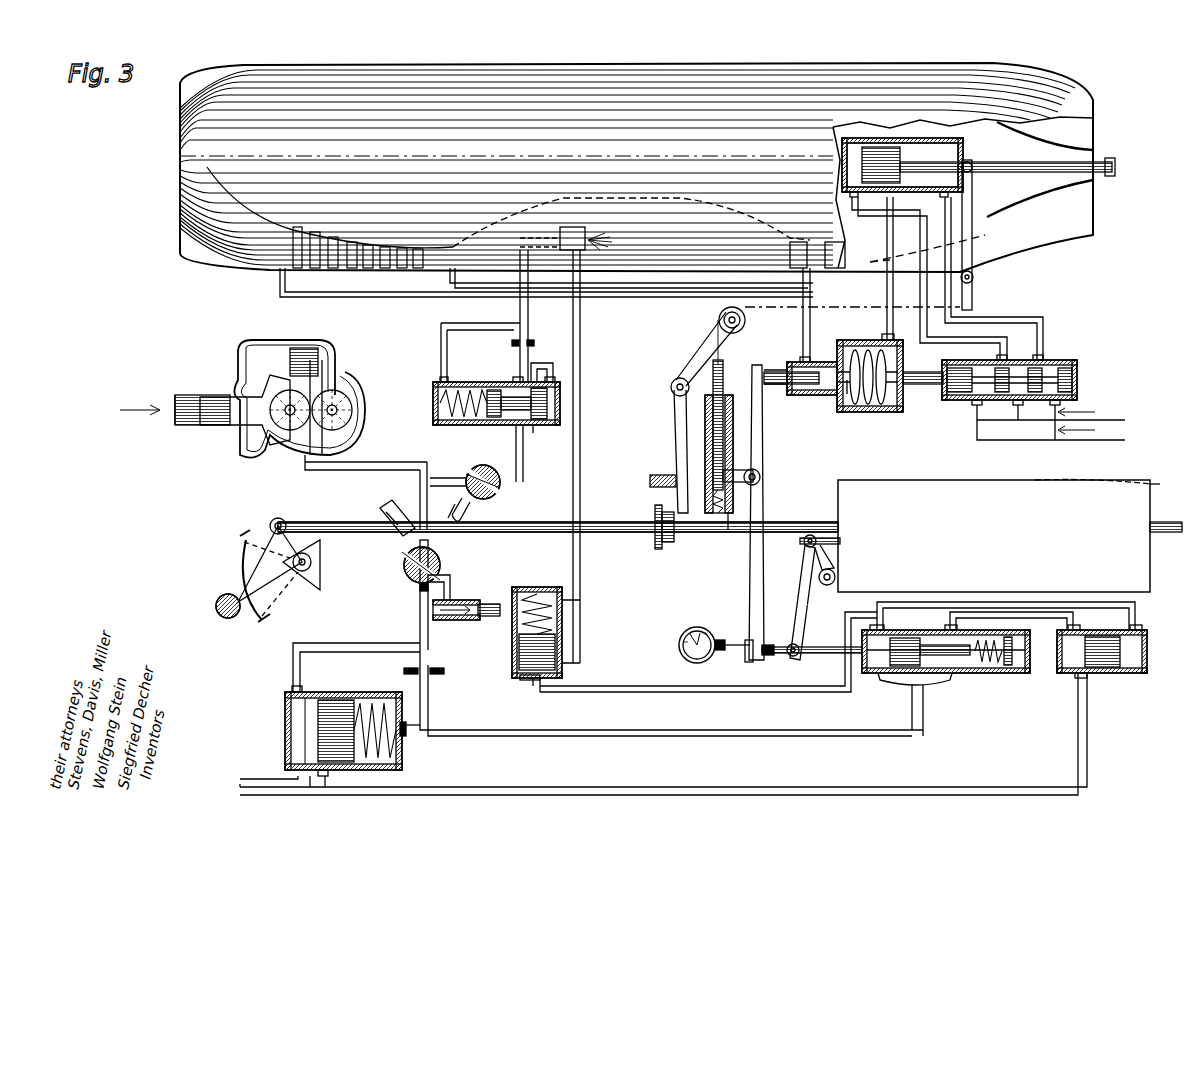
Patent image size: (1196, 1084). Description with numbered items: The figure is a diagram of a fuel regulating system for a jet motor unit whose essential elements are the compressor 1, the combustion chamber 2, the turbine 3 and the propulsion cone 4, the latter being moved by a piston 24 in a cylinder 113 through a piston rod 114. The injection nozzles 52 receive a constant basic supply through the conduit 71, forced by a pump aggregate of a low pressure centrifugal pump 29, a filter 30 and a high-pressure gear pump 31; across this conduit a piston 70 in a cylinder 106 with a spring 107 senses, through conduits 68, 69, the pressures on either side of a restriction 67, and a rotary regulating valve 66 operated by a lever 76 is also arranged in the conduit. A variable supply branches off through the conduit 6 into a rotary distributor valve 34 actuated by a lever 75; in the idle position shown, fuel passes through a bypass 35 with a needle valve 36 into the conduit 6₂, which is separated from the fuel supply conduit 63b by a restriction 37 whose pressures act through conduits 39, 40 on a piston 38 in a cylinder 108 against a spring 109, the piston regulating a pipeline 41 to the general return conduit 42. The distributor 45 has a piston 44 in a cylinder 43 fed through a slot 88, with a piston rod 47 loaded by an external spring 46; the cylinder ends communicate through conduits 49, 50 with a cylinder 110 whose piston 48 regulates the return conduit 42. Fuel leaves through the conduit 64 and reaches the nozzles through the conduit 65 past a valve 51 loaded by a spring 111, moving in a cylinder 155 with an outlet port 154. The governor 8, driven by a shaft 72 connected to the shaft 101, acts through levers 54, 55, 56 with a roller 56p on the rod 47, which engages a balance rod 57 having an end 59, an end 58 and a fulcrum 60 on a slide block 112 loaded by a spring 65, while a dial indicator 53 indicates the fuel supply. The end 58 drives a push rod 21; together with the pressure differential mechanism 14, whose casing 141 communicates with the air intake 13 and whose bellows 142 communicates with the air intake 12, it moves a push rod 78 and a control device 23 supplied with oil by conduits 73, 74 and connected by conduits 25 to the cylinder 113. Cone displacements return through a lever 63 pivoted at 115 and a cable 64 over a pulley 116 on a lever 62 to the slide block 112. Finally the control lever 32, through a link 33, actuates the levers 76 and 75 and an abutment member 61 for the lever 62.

The compressor 1 is at (365, 280).
The combustion chamber 2 is at (680, 285).
The turbine 3 is at (817, 302).
The propulsion cone 4 is at (1093, 112).
The variable fuel supply conduit 6 is at (428, 515).
The governor 8 is at (1150, 560).
The air intake 12 is at (280, 278).
The air intake 13 is at (440, 275).
The pressure differential mechanism 14 is at (888, 405).
The casing 141 is at (862, 345).
The bellows 142 is at (853, 410).
The push rod 21 is at (778, 395).
The control device 23 is at (1077, 382).
The piston 24 is at (880, 270).
The conduits 25 is at (1038, 356).
The low pressure centrifugal pump 29 is at (240, 430).
The filter 30 is at (295, 360).
The high-pressure gear pump 31 is at (332, 395).
The control lever 32 is at (282, 580).
The link 33 is at (557, 522).
The rotary distributor valve 34 is at (405, 575).
The bypass 35 is at (450, 582).
The needle valve 36 is at (482, 603).
The restriction 37 is at (438, 676).
The piston 38 is at (318, 712).
The conduit 39 is at (365, 645).
The conduit 40 is at (408, 736).
The pipeline 41 is at (273, 774).
The general return conduit 42 is at (575, 780).
The cylinder 43 is at (942, 632).
The piston 44 is at (910, 632).
The distributor 45 is at (988, 668).
The external spring 46 is at (1008, 668).
The piston rod 47 is at (816, 648).
The piston 48 is at (1108, 632).
The conduit 49 is at (1060, 622).
The conduit 50 is at (1140, 608).
The valve 51 is at (525, 655).
The injection nozzles 52 is at (533, 330).
The dial indicator 53 is at (715, 627).
The lever 54 is at (830, 535).
The lever 55 is at (795, 590).
The short lever arm 56 is at (818, 580).
The roller 56p is at (820, 573).
The balance rod 57 is at (758, 500).
The lever end 58 is at (757, 365).
The lever end 59 is at (765, 639).
The fulcrum 60 is at (762, 476).
The abutment member 61 is at (655, 540).
The lever 62 is at (432, 632).
The lever 63 is at (975, 265).
The fuel supply conduit 63b is at (545, 735).
The conduit 64 is at (793, 310).
The conduit 65 is at (580, 336).
The rotary regulating valve 66 is at (498, 490).
The restriction 67 is at (533, 346).
The conduit 68 is at (437, 352).
The conduit 69 is at (535, 362).
The piston 70 is at (533, 432).
The conduit 71 is at (518, 316).
The shaft 72 is at (1057, 490).
The conduit 73 is at (1130, 416).
The conduit 74 is at (1130, 436).
The operating lever 75 is at (406, 536).
The operating lever 76 is at (474, 500).
The push rod 78 is at (935, 388).
The fuel inlet longitudinal slot 88 is at (935, 682).
The shaft 101 is at (722, 158).
The cylinder 106 is at (492, 375).
The spring 107 is at (462, 425).
The cylinder 108 is at (365, 695).
The spring 109 is at (402, 715).
The cylinder 110 is at (1118, 680).
The spring 111 is at (540, 588).
The slide block 112 is at (705, 428).
The cylinder 113 is at (985, 205).
The piston rod 114 is at (1090, 178).
The pivot 115 is at (972, 300).
The pulley 116 is at (720, 322).
The outlet port 154 is at (566, 660).
The cylinder 155 is at (566, 614).